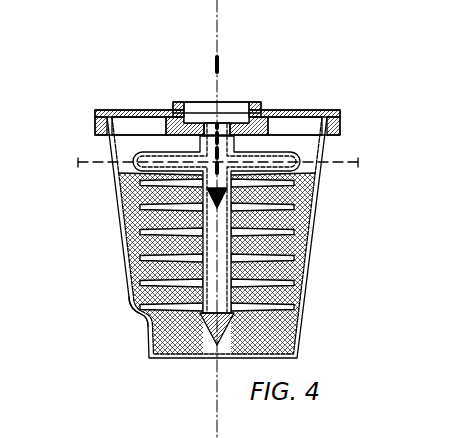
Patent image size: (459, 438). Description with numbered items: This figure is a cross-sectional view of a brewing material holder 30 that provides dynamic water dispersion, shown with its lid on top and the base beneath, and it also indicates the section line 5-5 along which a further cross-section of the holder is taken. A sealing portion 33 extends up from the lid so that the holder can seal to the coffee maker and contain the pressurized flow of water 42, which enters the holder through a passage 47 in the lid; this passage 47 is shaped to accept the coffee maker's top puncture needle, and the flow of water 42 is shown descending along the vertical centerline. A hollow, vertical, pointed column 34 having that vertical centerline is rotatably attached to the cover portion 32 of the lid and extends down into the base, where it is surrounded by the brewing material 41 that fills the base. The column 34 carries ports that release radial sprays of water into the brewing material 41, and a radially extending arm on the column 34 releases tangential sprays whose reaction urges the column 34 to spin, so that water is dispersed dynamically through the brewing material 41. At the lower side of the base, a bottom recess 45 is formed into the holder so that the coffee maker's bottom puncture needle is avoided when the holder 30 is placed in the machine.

The brewing material holder 30 is at (184, 220).
The cover portion 32 is at (298, 110).
The sealing portion 33 is at (253, 100).
The column 34 is at (215, 294).
The brewing material 41 is at (132, 296).
The flow of water 42 is at (221, 63).
The bottom recess 45 is at (135, 342).
The passage 47 is at (212, 116).
The line 5- 5 is at (358, 186).